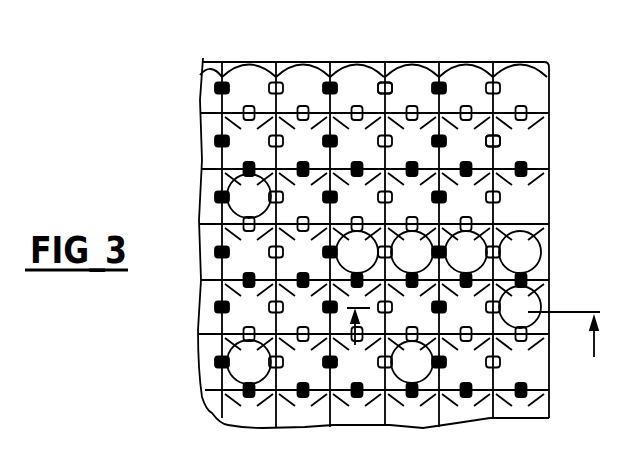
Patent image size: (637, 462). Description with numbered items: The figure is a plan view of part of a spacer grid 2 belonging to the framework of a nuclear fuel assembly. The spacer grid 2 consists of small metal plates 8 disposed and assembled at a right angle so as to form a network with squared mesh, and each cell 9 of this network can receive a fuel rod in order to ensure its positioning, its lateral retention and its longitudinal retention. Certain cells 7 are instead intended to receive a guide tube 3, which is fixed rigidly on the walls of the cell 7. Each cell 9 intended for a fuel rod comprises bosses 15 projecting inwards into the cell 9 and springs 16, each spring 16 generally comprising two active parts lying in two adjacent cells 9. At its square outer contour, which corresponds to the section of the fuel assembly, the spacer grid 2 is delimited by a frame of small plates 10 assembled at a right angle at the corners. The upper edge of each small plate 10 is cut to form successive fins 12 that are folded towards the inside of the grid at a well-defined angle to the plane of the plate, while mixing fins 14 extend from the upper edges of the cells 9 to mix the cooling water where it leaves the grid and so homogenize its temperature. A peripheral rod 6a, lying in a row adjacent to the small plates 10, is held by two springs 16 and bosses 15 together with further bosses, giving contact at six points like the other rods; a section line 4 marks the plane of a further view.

The spacer grid 2 is at (556, 131).
The guide tube 3 is at (353, 226).
The section line 4 is at (469, 345).
The peripheral rod 6a is at (548, 294).
The cell 7 is at (371, 261).
The small metal plate 8 is at (441, 100).
The cell 9 is at (400, 105).
The small plate 10 is at (549, 372).
The fin 12 is at (385, 62).
The mixing fin 14 is at (550, 197).
The boss 15 is at (466, 170).
The spring 16 is at (507, 254).